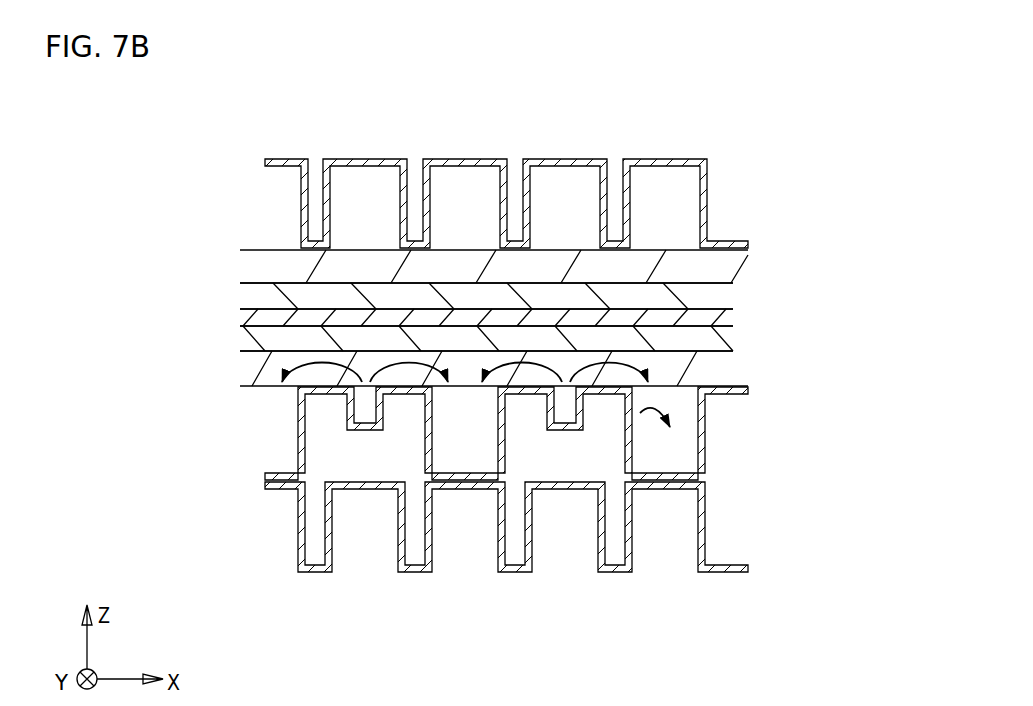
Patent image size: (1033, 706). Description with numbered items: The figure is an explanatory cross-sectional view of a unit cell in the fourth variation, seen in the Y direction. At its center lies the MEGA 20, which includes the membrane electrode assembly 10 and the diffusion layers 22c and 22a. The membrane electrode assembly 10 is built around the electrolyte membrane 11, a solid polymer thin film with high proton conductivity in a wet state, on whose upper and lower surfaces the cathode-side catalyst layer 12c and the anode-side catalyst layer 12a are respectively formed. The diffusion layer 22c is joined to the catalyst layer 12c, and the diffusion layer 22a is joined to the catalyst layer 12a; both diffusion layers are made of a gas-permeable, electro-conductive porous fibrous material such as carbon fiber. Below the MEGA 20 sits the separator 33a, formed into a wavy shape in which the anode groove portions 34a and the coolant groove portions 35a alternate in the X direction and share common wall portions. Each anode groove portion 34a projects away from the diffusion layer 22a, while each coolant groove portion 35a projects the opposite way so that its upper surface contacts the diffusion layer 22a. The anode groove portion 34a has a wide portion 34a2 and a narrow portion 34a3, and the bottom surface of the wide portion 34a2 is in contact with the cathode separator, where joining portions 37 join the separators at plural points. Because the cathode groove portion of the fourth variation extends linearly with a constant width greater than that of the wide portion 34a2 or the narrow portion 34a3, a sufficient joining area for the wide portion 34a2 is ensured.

The membrane electrode assembly 10 is at (551, 318).
The electrolyte membrane 11 is at (728, 318).
The anode-side catalyst layer 12a is at (531, 342).
The cathode-side catalyst layer 12c is at (728, 297).
The MEGA 20 is at (581, 316).
The anode-side diffusion layer 22a is at (555, 374).
The cathode-side diffusion layer 22c is at (712, 262).
The anode separator 33a is at (708, 437).
The anode groove portion 34a is at (631, 489).
The wide portion 34a2 is at (436, 452).
The narrow portion 34a3 is at (553, 399).
The coolant groove portion 35a is at (402, 403).
The joining portion 37 is at (462, 490).